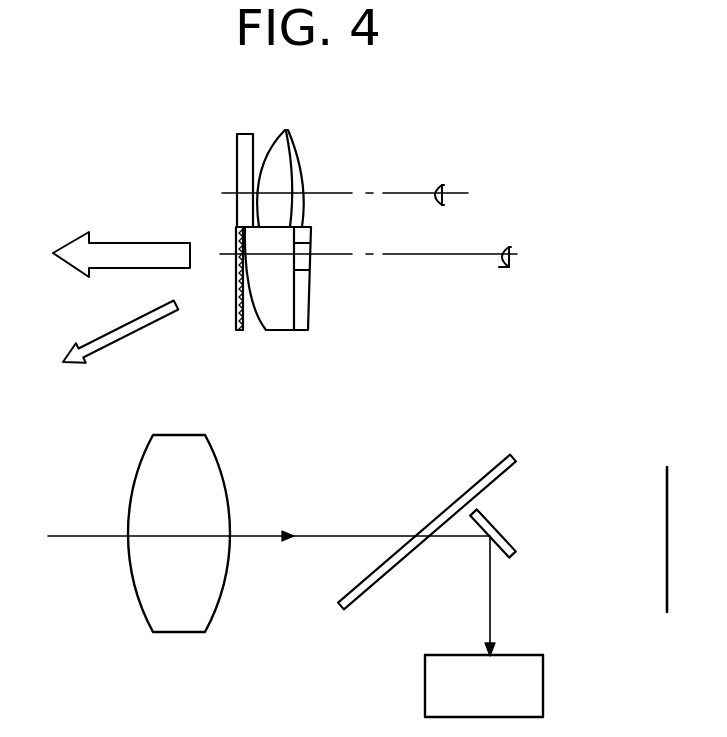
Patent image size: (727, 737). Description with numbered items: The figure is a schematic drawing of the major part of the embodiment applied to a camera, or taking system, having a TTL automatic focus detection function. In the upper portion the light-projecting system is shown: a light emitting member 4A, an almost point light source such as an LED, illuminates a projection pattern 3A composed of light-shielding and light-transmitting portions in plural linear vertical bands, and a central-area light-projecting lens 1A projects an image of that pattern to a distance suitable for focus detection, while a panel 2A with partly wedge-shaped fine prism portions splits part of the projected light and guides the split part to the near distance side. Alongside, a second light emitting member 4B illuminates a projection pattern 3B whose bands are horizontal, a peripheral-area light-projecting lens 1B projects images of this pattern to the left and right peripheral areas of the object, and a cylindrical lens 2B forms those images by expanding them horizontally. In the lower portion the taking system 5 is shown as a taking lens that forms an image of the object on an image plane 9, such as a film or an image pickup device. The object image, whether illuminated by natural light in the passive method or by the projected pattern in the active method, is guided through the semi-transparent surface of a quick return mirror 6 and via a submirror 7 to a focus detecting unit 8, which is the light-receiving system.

The central-area light-projecting lens 1A is at (309, 297).
The peripheral-area light-projecting lens 1B is at (293, 133).
The panel 2A is at (235, 293).
The cylindrical lens 2B is at (237, 166).
The projection pattern 3A is at (499, 264).
The projection pattern 3B is at (432, 187).
The light emitting member 4A is at (510, 263).
The light emitting member 4B is at (443, 190).
The taking system 5 is at (182, 634).
The quick return mirror 6 is at (497, 462).
The submirror 7 is at (513, 545).
The focus detecting unit 8 is at (543, 684).
The image plane 9 is at (665, 598).